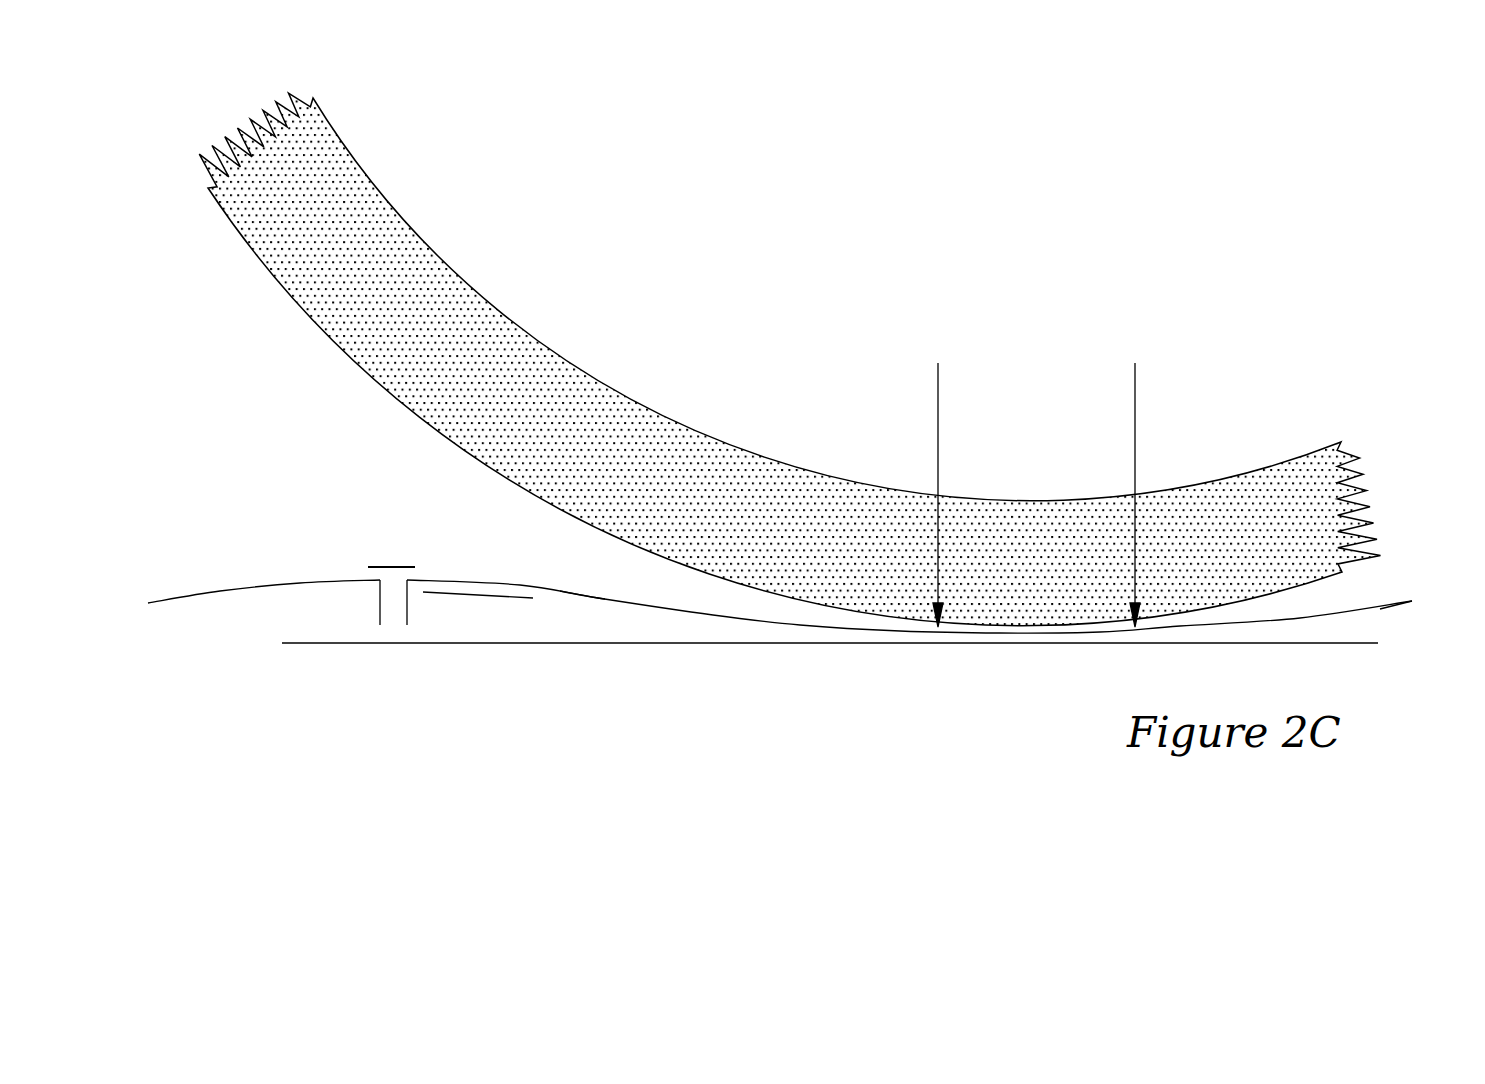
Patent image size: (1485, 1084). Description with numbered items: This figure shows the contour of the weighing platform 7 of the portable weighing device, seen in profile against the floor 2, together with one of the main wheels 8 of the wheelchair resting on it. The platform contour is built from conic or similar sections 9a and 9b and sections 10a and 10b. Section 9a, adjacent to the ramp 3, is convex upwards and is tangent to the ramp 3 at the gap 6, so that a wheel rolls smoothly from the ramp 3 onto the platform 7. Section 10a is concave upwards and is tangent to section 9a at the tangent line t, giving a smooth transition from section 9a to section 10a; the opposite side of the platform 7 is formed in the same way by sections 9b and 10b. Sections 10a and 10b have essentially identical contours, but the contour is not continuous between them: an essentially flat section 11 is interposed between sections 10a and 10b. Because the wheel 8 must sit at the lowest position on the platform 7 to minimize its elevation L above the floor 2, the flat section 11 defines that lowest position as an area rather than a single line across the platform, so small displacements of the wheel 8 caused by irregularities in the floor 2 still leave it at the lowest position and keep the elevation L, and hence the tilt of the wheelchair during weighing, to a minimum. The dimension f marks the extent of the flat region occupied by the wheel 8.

The floor 2 is at (392, 643).
The ramp 3 is at (220, 590).
The gap 6 is at (391, 567).
The weighing platform 7 is at (477, 593).
The main wheels 8 is at (577, 377).
The convex section 9a is at (598, 598).
The convex section 9b is at (1405, 604).
The concave section 10a is at (715, 615).
The concave section 10b is at (1312, 614).
The flat section 11 is at (983, 631).
The contact length f is at (1113, 392).
The tangent line t is at (673, 632).
The elevation L is at (937, 668).